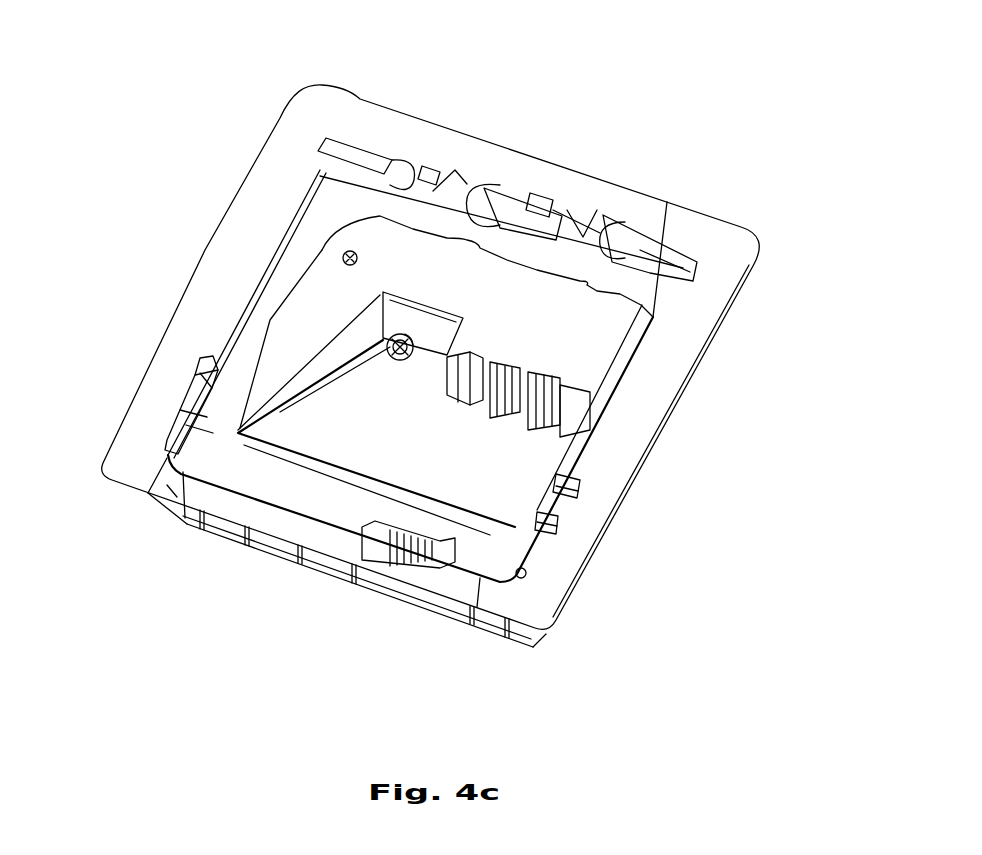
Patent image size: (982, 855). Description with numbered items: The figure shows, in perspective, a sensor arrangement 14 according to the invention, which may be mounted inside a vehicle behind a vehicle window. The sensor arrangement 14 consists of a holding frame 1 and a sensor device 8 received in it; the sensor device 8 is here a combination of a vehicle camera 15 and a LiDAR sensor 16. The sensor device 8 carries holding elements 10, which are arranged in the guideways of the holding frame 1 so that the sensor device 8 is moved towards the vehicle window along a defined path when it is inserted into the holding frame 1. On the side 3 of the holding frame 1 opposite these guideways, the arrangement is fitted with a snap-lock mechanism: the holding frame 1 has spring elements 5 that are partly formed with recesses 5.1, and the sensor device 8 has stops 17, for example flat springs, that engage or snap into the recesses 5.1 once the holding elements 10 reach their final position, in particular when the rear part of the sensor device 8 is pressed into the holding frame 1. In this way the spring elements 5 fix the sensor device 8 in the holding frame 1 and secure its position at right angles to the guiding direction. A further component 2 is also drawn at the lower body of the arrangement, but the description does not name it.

The sensor arrangement 14 is at (157, 74).
The holding frame 1 is at (698, 297).
The cover 2 is at (296, 600).
The side 3 is at (578, 103).
The spring elements 5 is at (362, 176).
The recesses 5.1 is at (392, 178).
The sensor device 8 is at (305, 333).
The holding elements 10 is at (167, 457).
The vehicle camera 15 is at (400, 340).
The LiDAR sensor 16 is at (452, 546).
The stops 17 is at (441, 228).